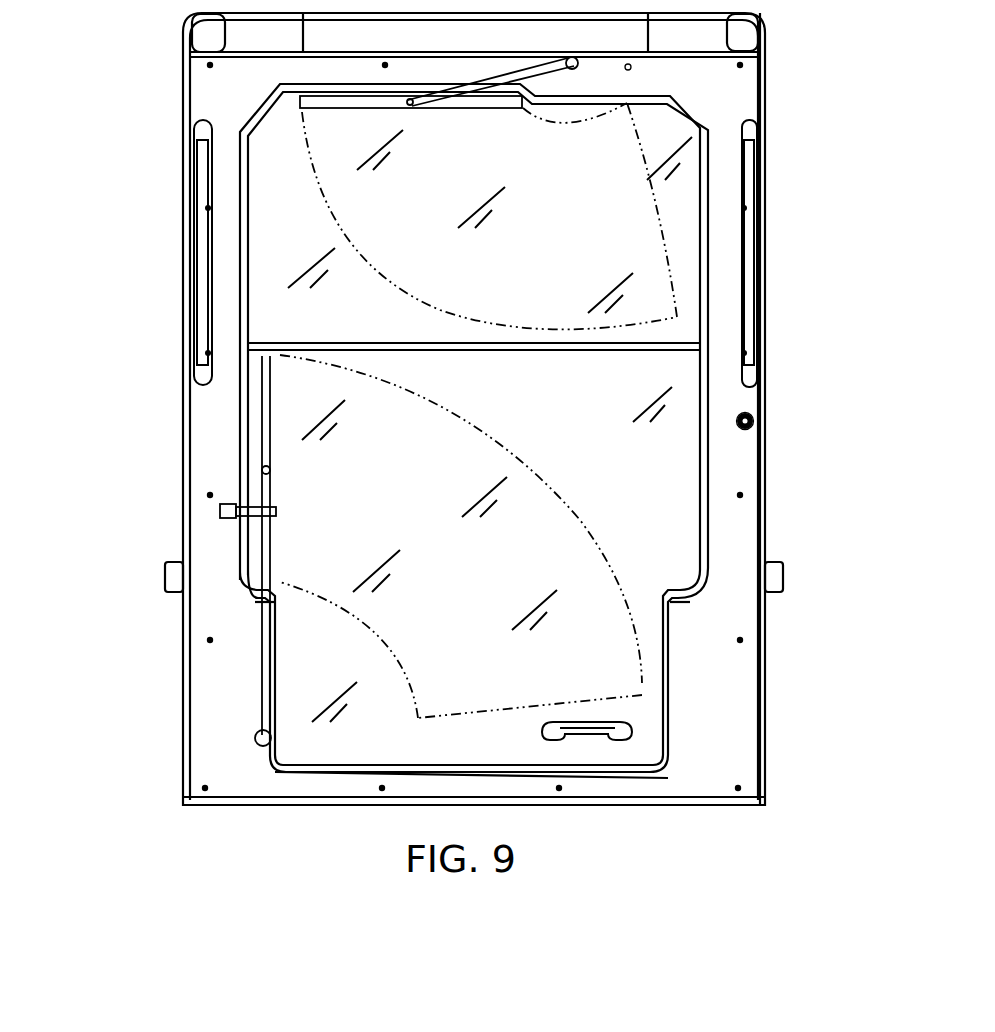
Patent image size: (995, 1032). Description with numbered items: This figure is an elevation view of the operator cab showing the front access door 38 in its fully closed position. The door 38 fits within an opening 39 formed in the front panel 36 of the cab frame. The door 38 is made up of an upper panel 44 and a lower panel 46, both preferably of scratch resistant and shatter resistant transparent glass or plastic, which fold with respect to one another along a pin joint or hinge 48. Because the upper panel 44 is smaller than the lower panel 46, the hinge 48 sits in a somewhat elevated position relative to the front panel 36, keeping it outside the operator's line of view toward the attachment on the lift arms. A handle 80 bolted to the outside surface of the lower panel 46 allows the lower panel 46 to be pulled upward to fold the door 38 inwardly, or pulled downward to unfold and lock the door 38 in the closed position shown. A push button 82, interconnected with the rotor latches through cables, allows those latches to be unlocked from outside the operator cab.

The front panel 36 is at (200, 88).
The front access door 38 is at (232, 408).
The opening 39 is at (252, 300).
The upper panel 44 is at (677, 225).
The lower panel 46 is at (653, 463).
The hinge 48 is at (683, 340).
The handle 80 is at (595, 727).
The push button 82 is at (748, 412).